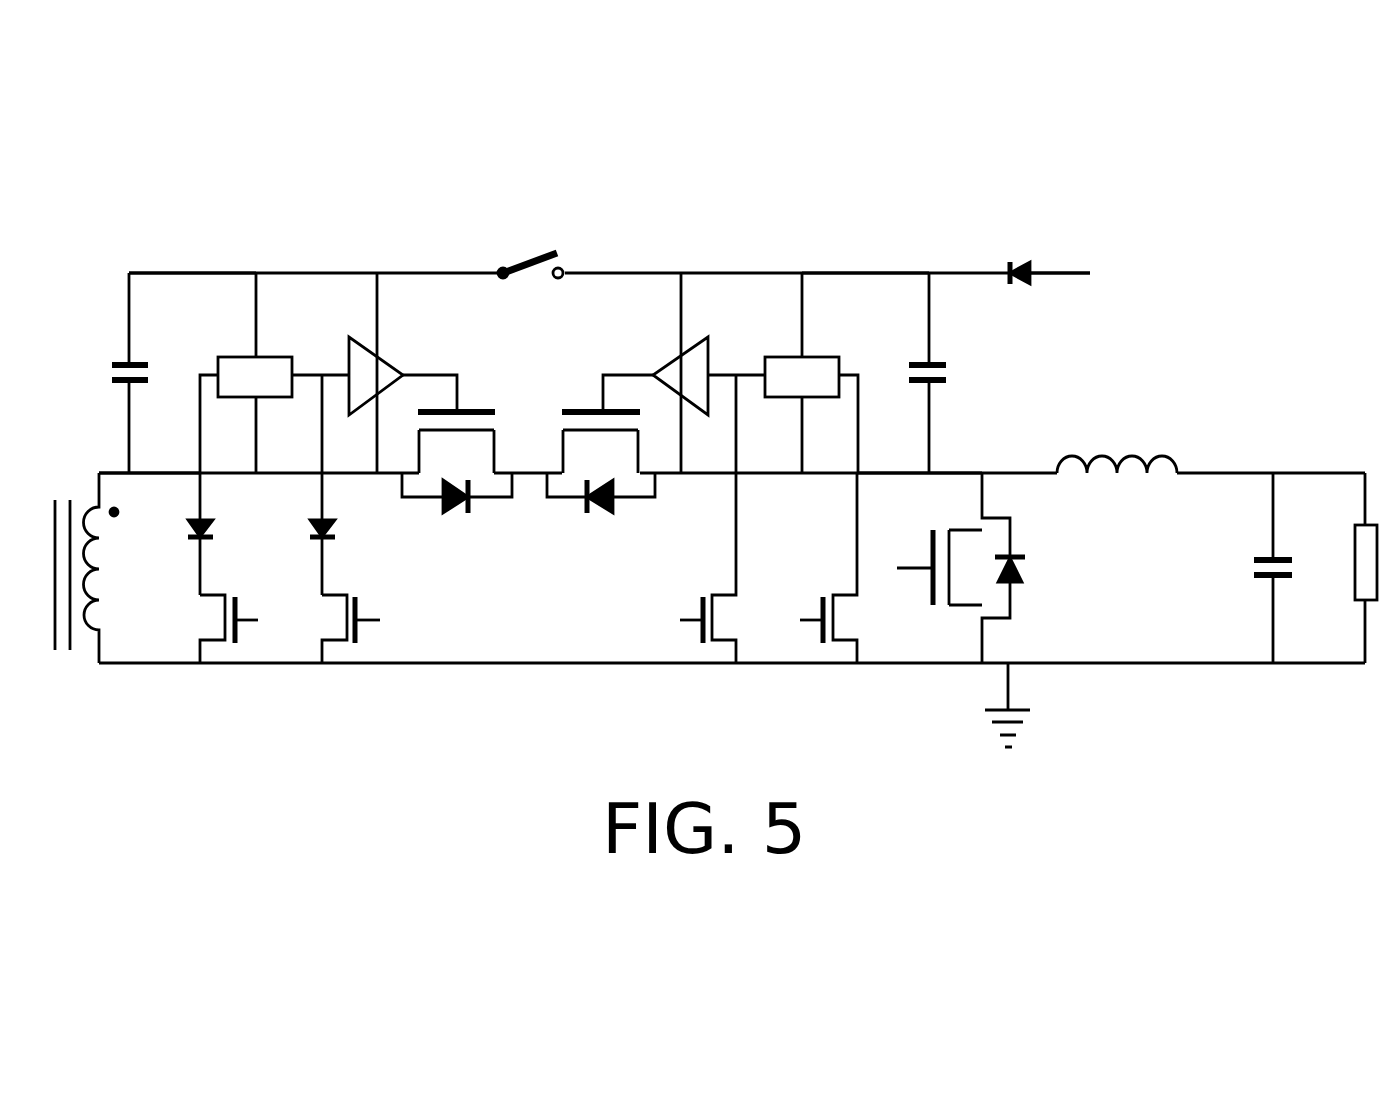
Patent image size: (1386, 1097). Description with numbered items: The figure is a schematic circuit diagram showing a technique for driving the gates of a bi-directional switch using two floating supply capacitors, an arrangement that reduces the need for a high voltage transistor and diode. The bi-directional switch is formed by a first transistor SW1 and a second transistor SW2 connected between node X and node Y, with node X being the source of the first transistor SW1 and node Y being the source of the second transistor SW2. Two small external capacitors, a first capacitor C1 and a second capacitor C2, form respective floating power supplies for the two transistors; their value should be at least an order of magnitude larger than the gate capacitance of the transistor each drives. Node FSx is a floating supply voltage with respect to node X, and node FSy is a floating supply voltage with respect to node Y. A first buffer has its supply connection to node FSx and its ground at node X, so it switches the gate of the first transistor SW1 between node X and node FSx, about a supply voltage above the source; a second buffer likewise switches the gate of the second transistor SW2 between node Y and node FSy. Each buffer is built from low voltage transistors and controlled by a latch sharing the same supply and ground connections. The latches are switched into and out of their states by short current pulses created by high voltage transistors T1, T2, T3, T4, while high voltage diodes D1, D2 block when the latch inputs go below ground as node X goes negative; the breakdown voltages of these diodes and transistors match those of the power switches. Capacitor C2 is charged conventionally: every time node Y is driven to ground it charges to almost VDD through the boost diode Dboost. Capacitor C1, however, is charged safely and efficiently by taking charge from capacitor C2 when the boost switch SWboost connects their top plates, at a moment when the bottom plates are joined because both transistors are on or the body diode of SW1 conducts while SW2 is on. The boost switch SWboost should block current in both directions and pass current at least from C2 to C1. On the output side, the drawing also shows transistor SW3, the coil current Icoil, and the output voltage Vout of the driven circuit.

The node FSx is at (178, 246).
The node FSy is at (877, 246).
The node X is at (149, 456).
The node Y is at (919, 454).
The boost switch SWboost is at (556, 247).
The boost diode Dboost is at (1051, 250).
The supply voltage VDD is at (1143, 274).
The first external capacitor C1 is at (155, 377).
The second external capacitor C2 is at (952, 377).
The element latch is at (529, 415).
The first transistor SW1 is at (457, 467).
The second transistor SW2 is at (601, 467).
The transistor SW3 is at (1002, 568).
The high voltage diode D1 is at (225, 534).
The high voltage diode D2 is at (346, 534).
The high voltage transistor T1 is at (235, 622).
The high voltage transistor T2 is at (372, 622).
The high voltage transistor T3 is at (689, 568).
The high voltage transistor T4 is at (827, 568).
The coil current / inductor Icoil is at (1145, 428).
The output voltage with output capacitor and load Vout is at (1315, 549).